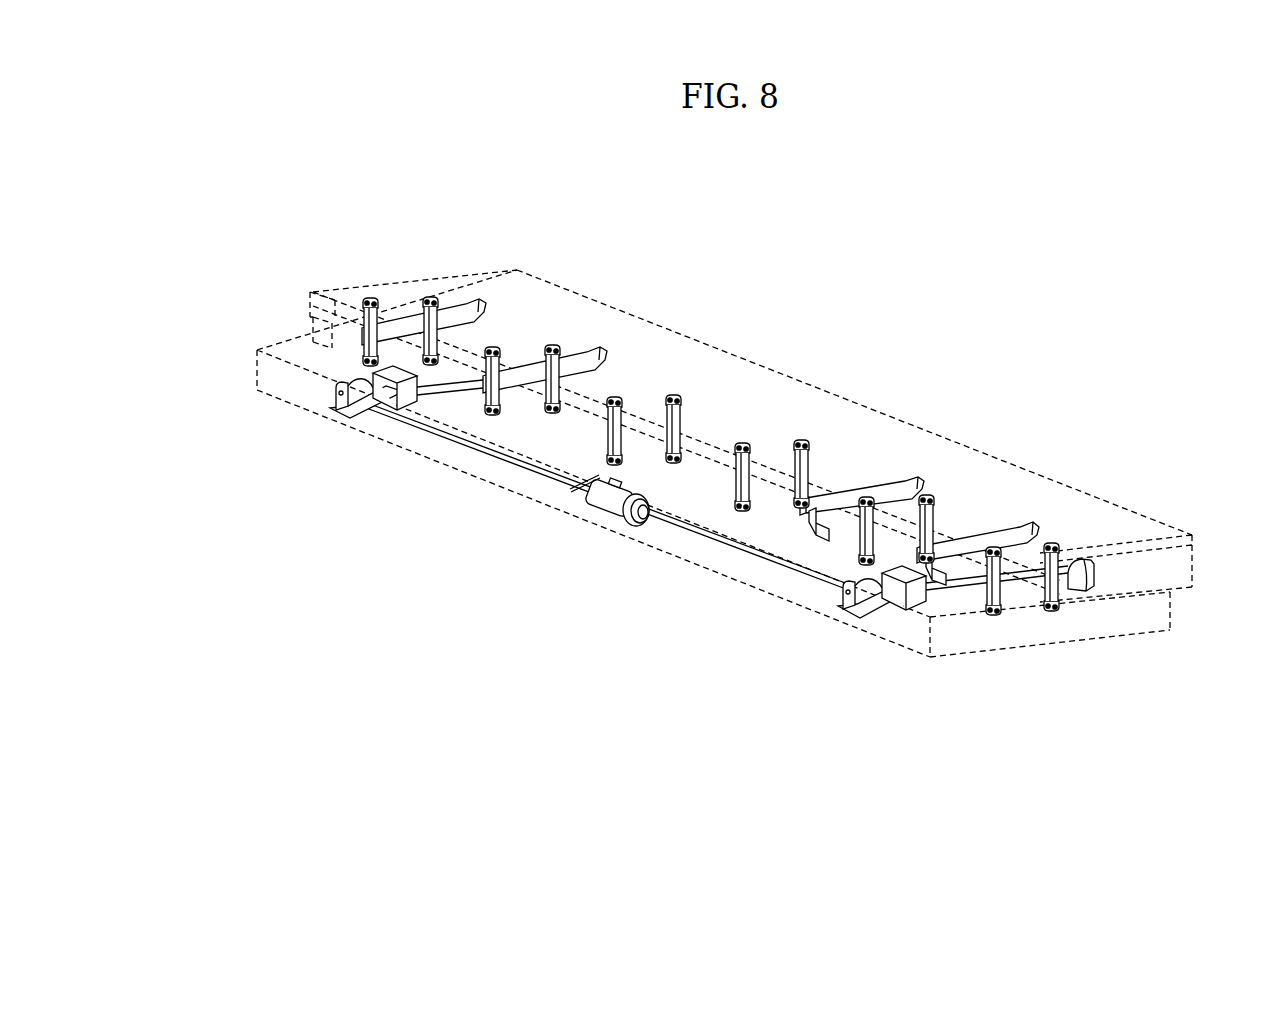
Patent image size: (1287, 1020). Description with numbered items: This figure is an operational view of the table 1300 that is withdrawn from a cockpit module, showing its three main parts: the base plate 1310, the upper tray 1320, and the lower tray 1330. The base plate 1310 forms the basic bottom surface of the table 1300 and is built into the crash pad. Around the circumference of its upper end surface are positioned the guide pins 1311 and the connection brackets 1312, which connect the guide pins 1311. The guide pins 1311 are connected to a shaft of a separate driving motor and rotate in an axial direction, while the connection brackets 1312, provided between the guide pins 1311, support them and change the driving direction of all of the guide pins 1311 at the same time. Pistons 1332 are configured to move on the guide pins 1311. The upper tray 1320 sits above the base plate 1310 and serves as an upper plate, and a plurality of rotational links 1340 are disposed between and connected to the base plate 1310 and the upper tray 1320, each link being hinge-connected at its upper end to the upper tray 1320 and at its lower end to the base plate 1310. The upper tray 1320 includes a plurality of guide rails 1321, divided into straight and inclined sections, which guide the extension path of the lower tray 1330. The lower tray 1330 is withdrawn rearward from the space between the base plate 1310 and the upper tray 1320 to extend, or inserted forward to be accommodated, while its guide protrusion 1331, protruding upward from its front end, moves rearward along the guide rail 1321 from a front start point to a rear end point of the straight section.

The table 1300 is at (760, 182).
The base plate 1310 is at (267, 378).
The guide pin 1311 is at (455, 440).
The connection bracket 1312 is at (352, 418).
The upper tray 1320 is at (809, 403).
The guide rail 1321 is at (923, 473).
The lower tray 1330 is at (322, 325).
The guide protrusion 1331 is at (812, 573).
The piston 1332 is at (393, 367).
The rotational link 1340 is at (737, 500).